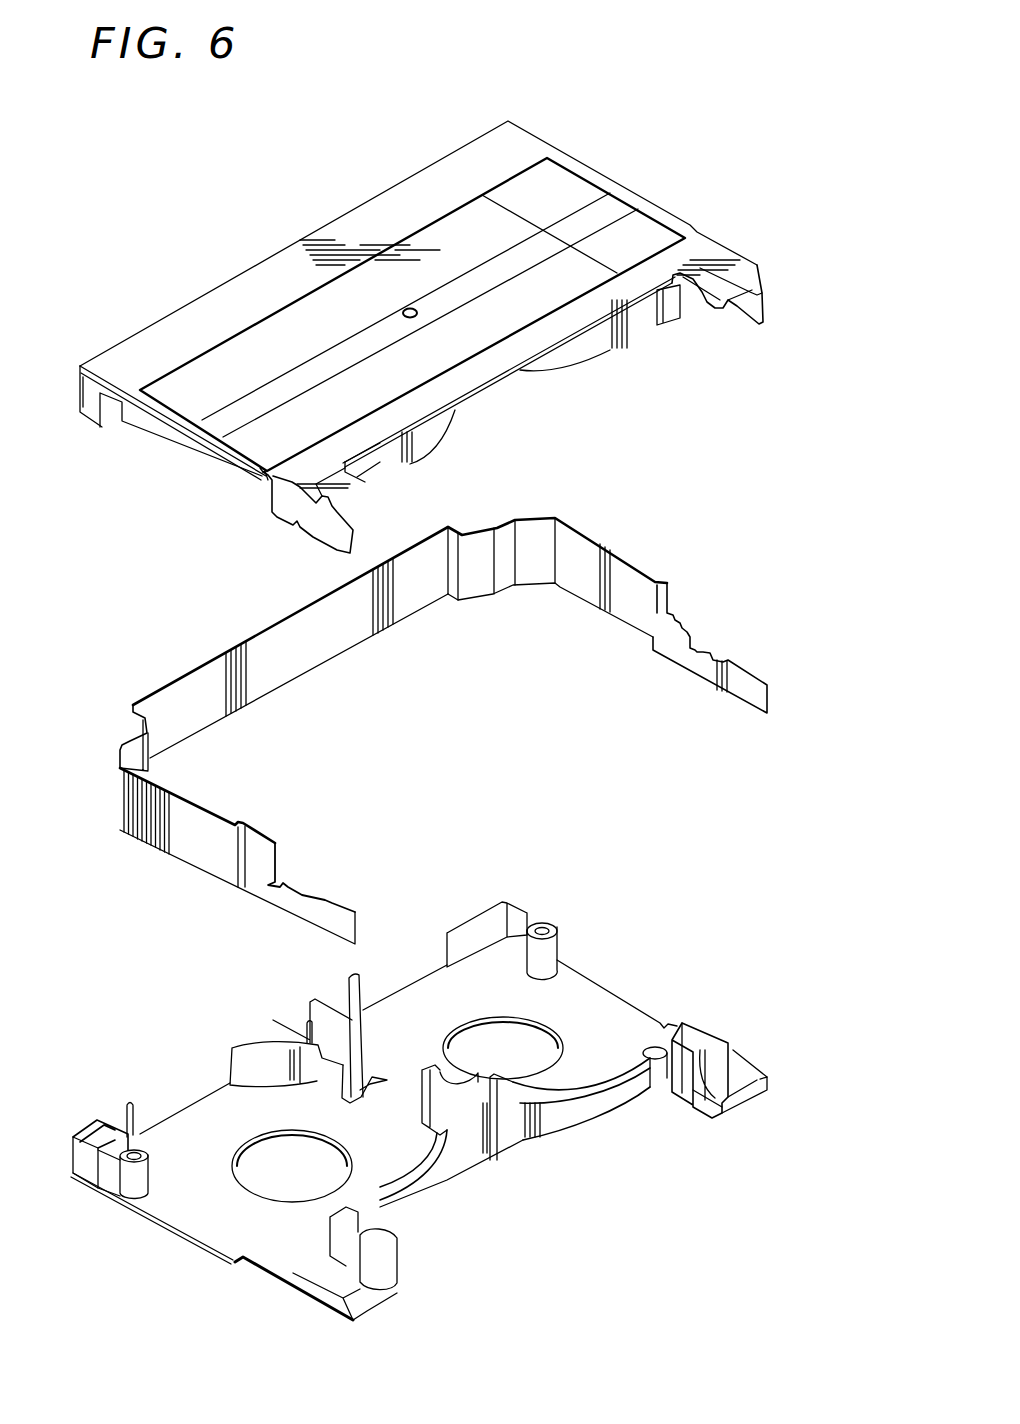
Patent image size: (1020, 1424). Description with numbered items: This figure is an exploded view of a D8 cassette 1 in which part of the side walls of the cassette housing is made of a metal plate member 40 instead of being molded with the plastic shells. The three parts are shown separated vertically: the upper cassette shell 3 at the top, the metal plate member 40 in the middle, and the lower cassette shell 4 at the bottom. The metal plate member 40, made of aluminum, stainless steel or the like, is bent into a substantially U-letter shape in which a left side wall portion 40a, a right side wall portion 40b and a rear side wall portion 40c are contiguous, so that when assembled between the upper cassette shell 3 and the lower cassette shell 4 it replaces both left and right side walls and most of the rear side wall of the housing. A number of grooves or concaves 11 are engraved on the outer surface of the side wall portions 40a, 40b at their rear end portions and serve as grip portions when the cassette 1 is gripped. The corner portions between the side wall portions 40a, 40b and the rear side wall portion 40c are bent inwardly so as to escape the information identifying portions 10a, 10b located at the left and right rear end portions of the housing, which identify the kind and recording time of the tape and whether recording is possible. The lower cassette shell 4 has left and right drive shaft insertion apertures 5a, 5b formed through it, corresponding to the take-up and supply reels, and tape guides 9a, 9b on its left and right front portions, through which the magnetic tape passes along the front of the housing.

The D8 cassette 1 is at (342, 160).
The upper cassette shell 3 is at (260, 287).
The lower cassette shell 4 is at (490, 1160).
The drive shaft insertion aperture 5a is at (273, 1198).
The drive shaft insertion aperture 5b is at (545, 1058).
The tape guide 9a is at (382, 1262).
The tape guide 9b is at (728, 1068).
The information identifying portion 10a is at (95, 1118).
The information identifying portion 10b is at (513, 913).
The grooves or concaves 11 is at (128, 835).
The metal plate member 40 is at (333, 667).
The left side wall portion 40a is at (213, 853).
The right side wall portion 40b is at (625, 580).
The rear side wall portion 40c is at (280, 640).